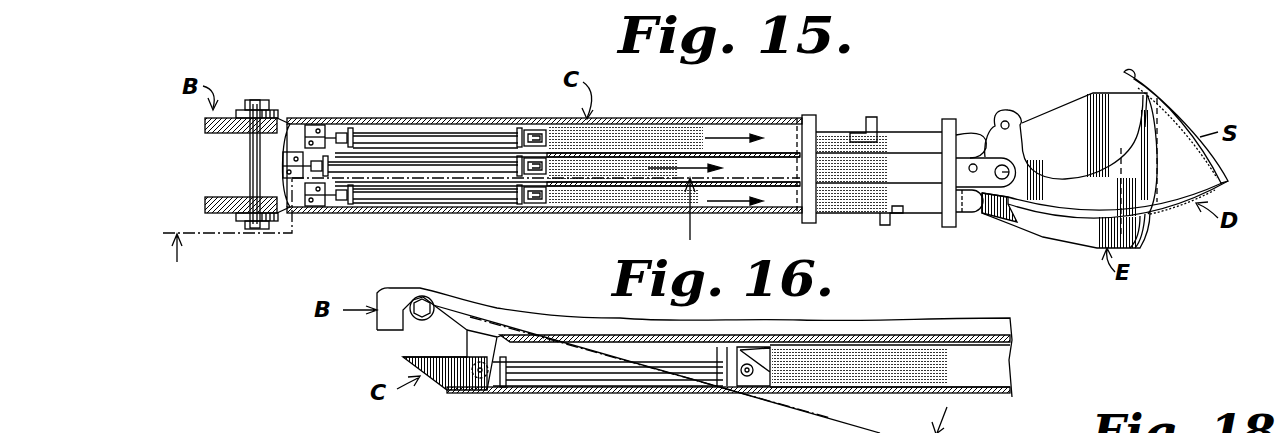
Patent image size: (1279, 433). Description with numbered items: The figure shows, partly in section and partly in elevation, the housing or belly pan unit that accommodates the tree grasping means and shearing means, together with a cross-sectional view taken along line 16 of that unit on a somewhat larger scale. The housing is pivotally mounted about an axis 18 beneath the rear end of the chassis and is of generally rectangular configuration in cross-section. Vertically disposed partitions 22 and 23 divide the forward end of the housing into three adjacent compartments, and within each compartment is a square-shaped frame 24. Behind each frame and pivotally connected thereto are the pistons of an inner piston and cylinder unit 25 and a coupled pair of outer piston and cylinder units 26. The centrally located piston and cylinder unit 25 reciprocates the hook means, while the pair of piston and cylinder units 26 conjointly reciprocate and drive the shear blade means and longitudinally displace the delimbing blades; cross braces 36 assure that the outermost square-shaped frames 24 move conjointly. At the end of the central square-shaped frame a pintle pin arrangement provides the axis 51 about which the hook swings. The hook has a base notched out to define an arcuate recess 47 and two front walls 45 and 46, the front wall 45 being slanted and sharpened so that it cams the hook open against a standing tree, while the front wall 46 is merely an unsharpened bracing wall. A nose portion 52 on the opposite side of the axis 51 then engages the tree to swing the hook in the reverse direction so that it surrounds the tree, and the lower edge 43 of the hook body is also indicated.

In FIG. 15, the section line 16 is at (428, 233).
In FIG. 15, the axis 18 is at (252, 150).
In FIG. 16, the axis 18 is at (405, 318).
In FIG. 15, the vertically disposed partition 22 is at (620, 152).
In FIG. 15, the vertically disposed partition 23 is at (600, 187).
In FIG. 15, the square-shaped frame 24 is at (775, 137).
In FIG. 16, the square-shaped frame 24 is at (1012, 366).
In FIG. 15, the inner piston and cylinder unit 25 is at (373, 166).
In FIG. 16, the inner piston and cylinder unit 25 is at (596, 370).
In FIG. 15, the outer piston and cylinder units 26 is at (443, 135).
In FIG. 15, the cross brace 36 is at (812, 128).
In FIG. 15, the jaw lower edge 43 is at (1228, 187).
In FIG. 15, the front wall 45 is at (1162, 81).
In FIG. 15, the front wall 46 is at (1060, 208).
In FIG. 15, the arcuate recess 47 is at (1050, 170).
In FIG. 15, the axis 51 is at (1012, 170).
In FIG. 15, the nose portion 52 is at (1010, 110).